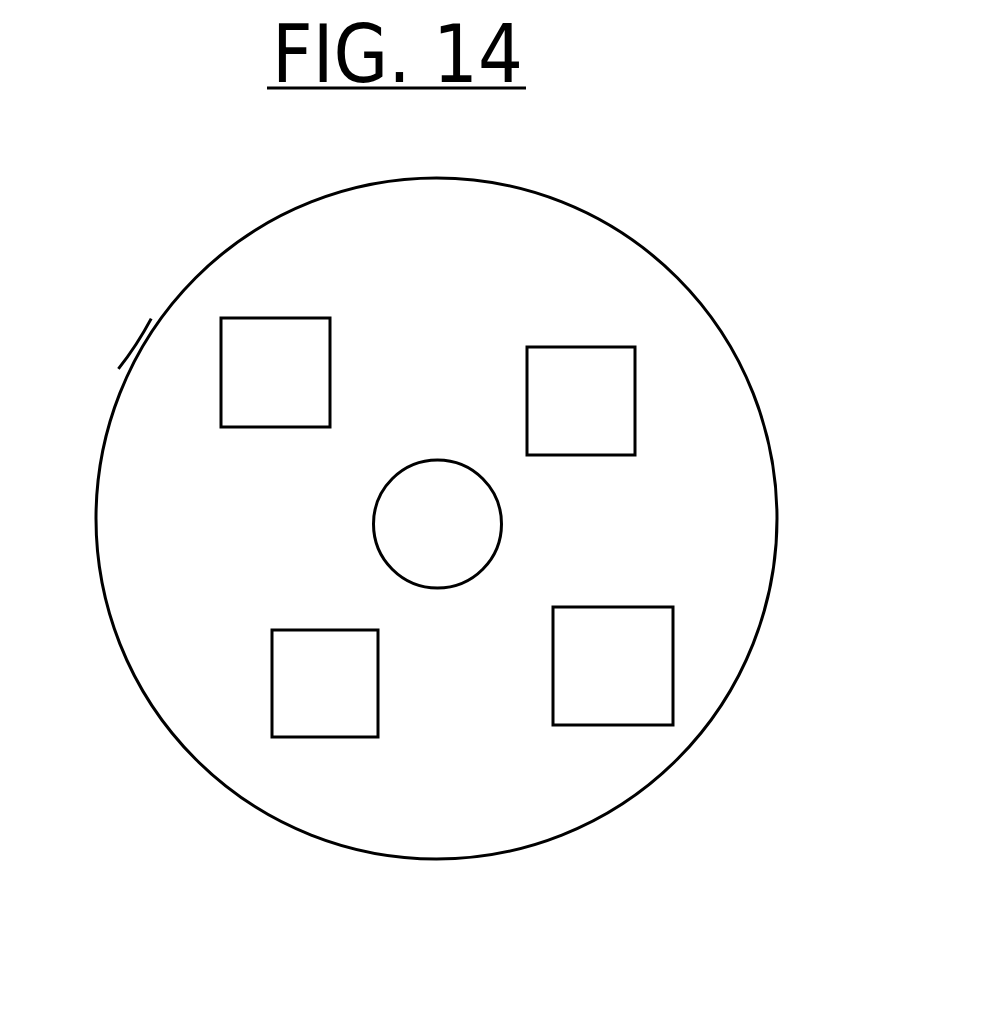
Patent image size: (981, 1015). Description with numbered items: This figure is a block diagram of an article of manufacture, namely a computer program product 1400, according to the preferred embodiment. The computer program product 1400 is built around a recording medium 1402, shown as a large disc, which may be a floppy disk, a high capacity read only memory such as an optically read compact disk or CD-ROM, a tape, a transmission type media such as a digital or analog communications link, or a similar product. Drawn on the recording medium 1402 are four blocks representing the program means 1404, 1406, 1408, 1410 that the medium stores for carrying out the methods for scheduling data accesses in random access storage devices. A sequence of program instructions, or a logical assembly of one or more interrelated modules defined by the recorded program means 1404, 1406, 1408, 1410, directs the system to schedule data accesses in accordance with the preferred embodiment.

The computer program product 1400 is at (880, 247).
The recording medium 1402 is at (147, 314).
The program means 1404 is at (581, 401).
The program means 1406 is at (613, 666).
The program means 1408 is at (325, 683).
The program means 1410 is at (275, 372).